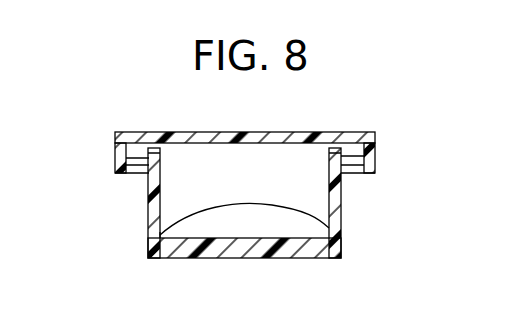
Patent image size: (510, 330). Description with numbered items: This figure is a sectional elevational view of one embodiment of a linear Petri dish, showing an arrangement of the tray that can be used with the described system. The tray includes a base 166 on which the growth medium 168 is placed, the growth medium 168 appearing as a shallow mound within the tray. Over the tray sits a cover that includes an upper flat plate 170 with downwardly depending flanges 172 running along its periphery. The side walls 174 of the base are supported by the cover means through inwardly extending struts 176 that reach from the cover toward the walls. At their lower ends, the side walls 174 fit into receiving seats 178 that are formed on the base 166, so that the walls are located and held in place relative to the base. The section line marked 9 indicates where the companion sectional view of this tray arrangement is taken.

The base 166 is at (206, 260).
The growth medium 168 is at (290, 181).
The upper flat plate 170 is at (237, 131).
The downwardly depending flanges 172 is at (376, 155).
The side walls 174 is at (149, 181).
The inwardly extending struts 176 is at (134, 157).
The receiving seats 178 is at (158, 242).
The section line 9- 9 is at (127, 194).